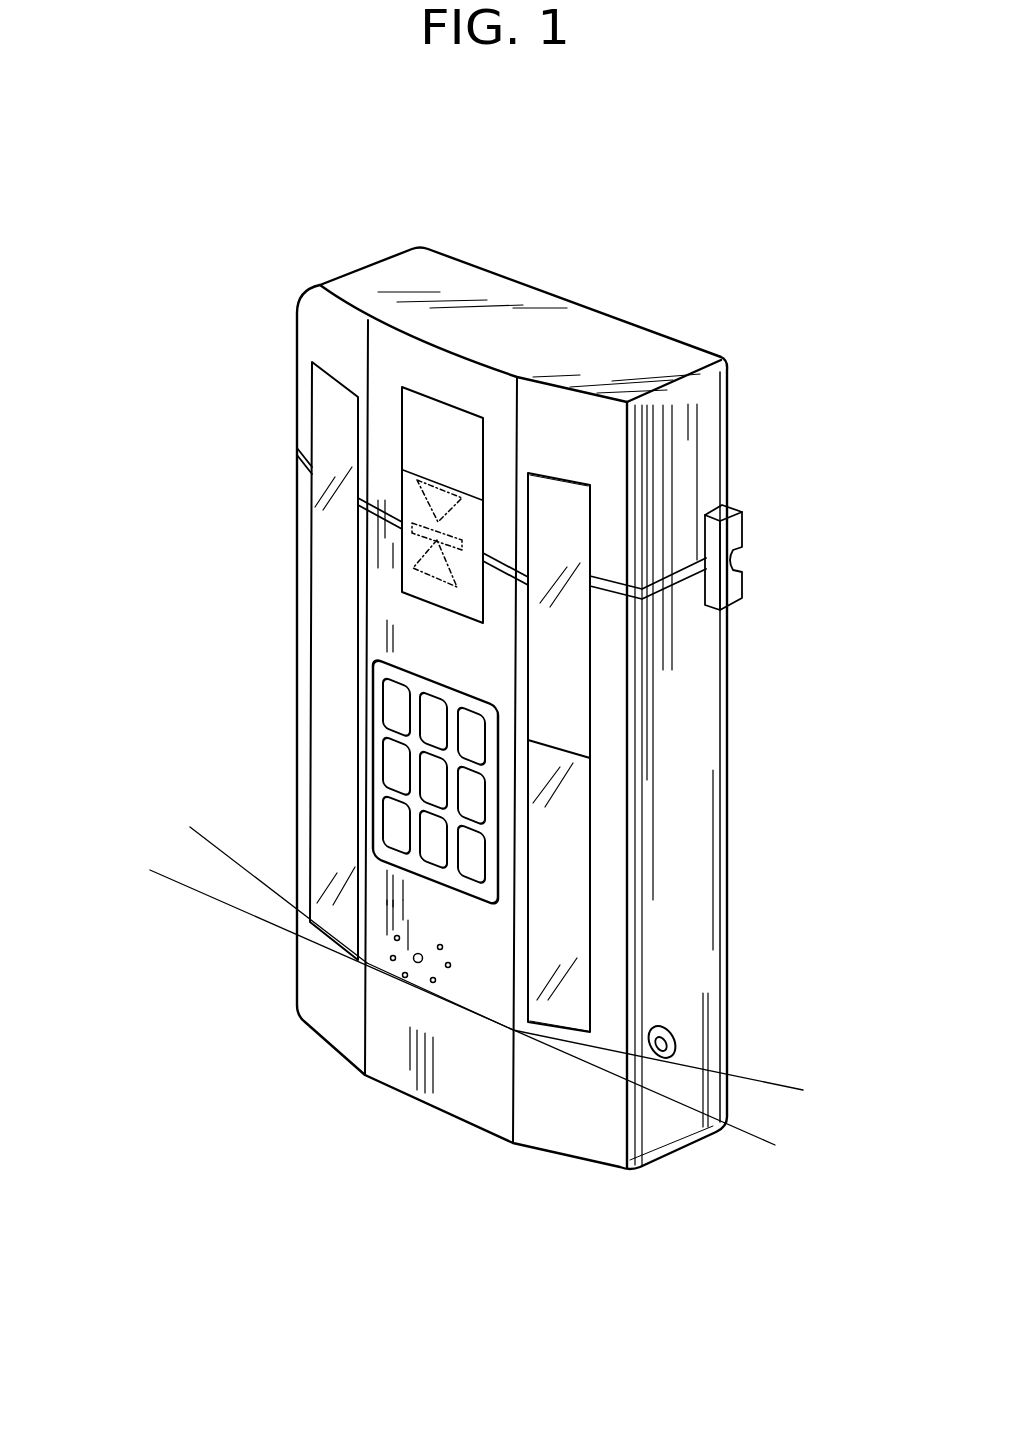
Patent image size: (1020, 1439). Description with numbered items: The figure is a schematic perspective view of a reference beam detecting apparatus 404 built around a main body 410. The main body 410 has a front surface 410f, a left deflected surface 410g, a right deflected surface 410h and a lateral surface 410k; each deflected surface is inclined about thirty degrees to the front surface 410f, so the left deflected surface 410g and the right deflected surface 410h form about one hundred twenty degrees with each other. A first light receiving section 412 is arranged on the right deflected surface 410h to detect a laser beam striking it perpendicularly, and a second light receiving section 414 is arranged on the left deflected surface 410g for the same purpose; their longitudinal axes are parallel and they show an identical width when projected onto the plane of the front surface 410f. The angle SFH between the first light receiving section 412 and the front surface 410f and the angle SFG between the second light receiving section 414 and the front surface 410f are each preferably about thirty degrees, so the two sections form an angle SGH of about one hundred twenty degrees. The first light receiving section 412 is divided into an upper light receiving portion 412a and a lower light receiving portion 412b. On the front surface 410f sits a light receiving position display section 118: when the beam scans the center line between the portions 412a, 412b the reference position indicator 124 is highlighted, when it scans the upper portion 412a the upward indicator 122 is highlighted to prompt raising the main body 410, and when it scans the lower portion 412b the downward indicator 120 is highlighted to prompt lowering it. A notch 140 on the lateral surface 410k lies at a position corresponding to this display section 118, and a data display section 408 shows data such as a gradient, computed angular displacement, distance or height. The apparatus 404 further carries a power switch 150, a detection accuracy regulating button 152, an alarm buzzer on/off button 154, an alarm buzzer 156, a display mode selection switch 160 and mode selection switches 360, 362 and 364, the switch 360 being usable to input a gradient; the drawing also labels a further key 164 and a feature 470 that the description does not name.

The reference beam detecting apparatus 404 is at (553, 283).
The data display section 408 is at (421, 400).
The second light receiving section 414 is at (327, 420).
The reference position indicator 124 is at (452, 568).
The upward indicator 122 is at (557, 503).
The first light receiving section 412 is at (525, 465).
The upper light receiving portion 412a is at (560, 550).
The lower light receiving portion 412b is at (560, 1020).
The downward indicator 120 is at (358, 497).
The light receiving position display section 118 is at (420, 585).
The notch 140 is at (735, 540).
The main body 410 is at (676, 1174).
The front surface 410f is at (395, 1072).
The left deflected surface 410g is at (320, 1020).
The right deflected surface 410h is at (600, 1148).
The lateral surface 410k is at (690, 682).
The power switch 150 is at (395, 700).
The detection accuracy regulating button 152 is at (435, 728).
The alarm buzzer on/off button 154 is at (472, 747).
The display mode selection switch 160 is at (435, 787).
The key 164 is at (488, 807).
The mode selection switch 360 is at (477, 863).
The mode selection switch 362 is at (435, 853).
The mode selection switch 364 is at (395, 823).
The alarm buzzer 156 is at (393, 958).
The strap hole 470 is at (675, 1038).
The angle SFG is at (203, 840).
The angle SFH is at (780, 1093).
The angle SGH is at (413, 998).